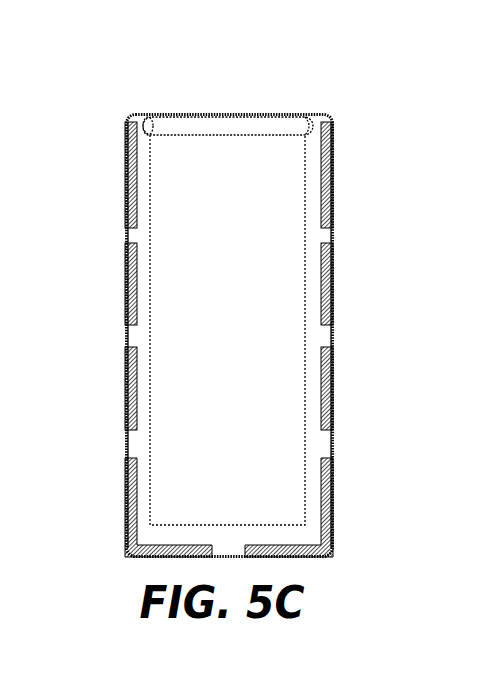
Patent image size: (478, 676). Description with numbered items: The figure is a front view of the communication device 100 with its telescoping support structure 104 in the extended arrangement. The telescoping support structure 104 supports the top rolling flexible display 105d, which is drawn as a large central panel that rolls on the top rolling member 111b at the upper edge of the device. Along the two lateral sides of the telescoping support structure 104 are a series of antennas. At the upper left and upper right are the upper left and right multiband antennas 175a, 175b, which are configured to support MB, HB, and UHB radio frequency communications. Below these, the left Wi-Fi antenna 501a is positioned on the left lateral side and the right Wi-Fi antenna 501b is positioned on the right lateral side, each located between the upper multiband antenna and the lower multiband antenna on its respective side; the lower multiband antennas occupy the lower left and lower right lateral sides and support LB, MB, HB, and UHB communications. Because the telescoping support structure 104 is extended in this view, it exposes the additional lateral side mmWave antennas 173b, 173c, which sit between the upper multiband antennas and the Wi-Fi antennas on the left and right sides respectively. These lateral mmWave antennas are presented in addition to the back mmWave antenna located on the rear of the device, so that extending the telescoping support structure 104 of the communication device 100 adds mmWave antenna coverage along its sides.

The communication device 100 is at (82, 102).
The telescoping support structure 104 is at (333, 333).
The top rolling member 111b is at (315, 119).
The top rolling flexible display 105d is at (207, 331).
The upper left multiband antenna 175a is at (120, 555).
The upper right multiband antenna 175b is at (338, 555).
The lateral side mmWave antenna 173b is at (120, 325).
The lateral side mmWave antenna 173c is at (338, 325).
The left Wi-Fi antenna 501a is at (120, 430).
The right Wi-Fi antenna 501b is at (338, 430).